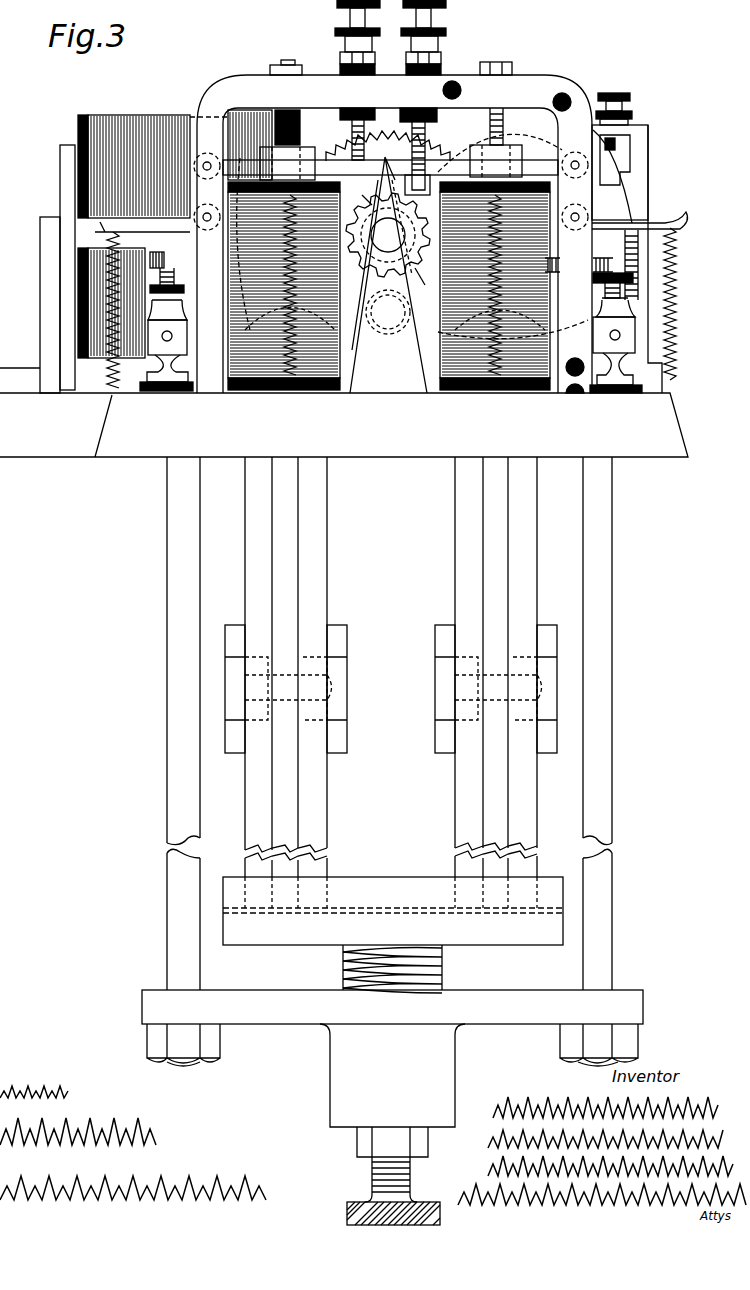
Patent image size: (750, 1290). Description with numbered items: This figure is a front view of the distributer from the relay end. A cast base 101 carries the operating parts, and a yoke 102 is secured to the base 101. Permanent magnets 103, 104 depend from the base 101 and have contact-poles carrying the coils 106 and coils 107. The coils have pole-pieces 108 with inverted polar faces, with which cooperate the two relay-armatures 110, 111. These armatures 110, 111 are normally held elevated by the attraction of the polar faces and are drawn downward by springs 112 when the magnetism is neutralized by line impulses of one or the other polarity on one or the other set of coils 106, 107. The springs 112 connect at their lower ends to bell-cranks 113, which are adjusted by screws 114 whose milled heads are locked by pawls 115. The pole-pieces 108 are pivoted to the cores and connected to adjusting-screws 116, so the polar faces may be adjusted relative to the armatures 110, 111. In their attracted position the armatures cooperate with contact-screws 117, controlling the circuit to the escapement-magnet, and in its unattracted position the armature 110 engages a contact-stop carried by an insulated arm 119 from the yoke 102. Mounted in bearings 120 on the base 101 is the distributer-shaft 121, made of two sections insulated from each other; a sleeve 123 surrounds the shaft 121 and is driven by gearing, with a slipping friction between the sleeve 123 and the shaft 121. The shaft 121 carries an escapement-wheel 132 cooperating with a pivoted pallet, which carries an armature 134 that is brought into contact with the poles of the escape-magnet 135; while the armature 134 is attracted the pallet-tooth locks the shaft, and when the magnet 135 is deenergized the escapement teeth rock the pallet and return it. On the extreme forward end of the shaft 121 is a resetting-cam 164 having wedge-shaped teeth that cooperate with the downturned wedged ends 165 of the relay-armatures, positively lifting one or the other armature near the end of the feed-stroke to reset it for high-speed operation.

The cast base 101 is at (590, 424).
The yoke 102 is at (300, 100).
The permanent magnet 103 is at (325, 576).
The permanent magnet 104 is at (533, 576).
The coils 106 is at (270, 375).
The coils 107 is at (478, 375).
The pole-piece 108 is at (496, 161).
The armature 110 is at (560, 165).
The armature 111 is at (245, 168).
The spring 112 is at (410, 285).
The bell-crank 113 is at (395, 322).
The adjusting screw 114 is at (175, 262).
The pawl 115 is at (190, 240).
The adjusting-screw 116 is at (284, 68).
The contact-screw 117 is at (432, 18).
The insulated arm 119 is at (430, 150).
The bearing 120 is at (388, 312).
The distributer-shaft 121 is at (388, 235).
The sleeve 123 is at (383, 275).
The escapement-wheel 132 is at (620, 156).
The armature 134 is at (358, 197).
The escape-magnet 135 is at (427, 284).
The resetting-cam 164 is at (388, 235).
The wedged end 165 is at (388, 146).